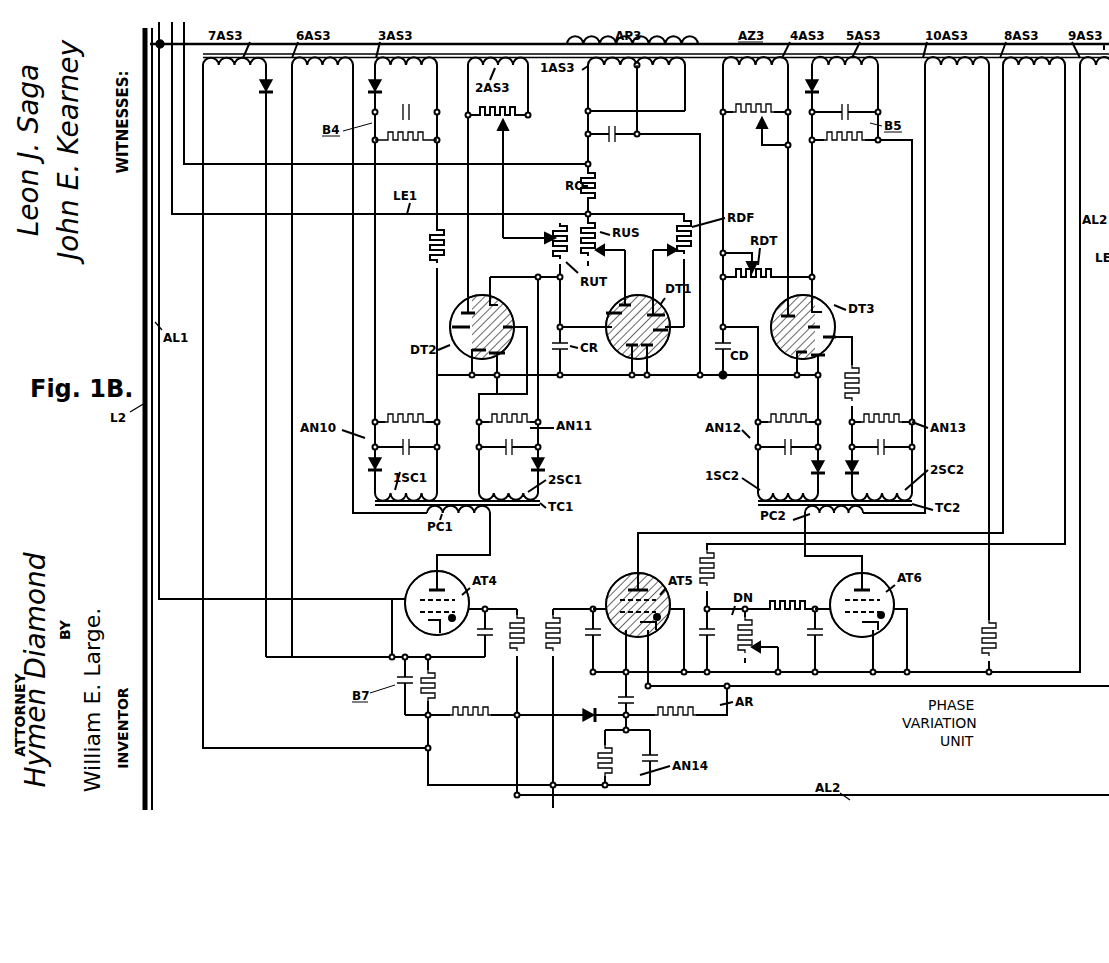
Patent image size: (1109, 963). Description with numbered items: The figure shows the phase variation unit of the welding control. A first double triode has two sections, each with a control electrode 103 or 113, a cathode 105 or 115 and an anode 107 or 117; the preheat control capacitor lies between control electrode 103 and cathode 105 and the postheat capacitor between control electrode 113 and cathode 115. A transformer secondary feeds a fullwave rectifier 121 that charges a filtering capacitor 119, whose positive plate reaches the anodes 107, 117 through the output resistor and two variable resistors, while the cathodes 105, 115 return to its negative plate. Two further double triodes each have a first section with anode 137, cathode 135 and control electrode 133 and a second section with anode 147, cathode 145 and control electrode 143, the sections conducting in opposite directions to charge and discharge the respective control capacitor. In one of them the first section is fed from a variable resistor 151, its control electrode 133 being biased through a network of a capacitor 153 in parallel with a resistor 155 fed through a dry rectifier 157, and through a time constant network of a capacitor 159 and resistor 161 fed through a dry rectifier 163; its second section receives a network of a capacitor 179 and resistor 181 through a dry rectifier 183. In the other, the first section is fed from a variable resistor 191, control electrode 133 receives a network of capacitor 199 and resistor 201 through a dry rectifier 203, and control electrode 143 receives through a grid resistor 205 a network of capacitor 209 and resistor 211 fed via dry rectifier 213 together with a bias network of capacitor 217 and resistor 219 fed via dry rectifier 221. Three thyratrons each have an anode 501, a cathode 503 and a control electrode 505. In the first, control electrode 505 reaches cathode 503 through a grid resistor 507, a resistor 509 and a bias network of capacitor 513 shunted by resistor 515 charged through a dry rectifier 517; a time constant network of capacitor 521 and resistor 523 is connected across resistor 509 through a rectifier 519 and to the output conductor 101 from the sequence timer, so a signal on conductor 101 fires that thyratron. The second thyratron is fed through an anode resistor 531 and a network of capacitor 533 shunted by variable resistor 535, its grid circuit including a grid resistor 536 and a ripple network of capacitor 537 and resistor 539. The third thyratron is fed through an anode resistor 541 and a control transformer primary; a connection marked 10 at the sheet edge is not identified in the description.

The dry rectifier 517 is at (258, 87).
The dry rectifier 157 is at (369, 87).
The capacitor 153 is at (409, 103).
The resistor 155 is at (402, 143).
The variable resistor 151 is at (510, 122).
The fullwave rectifier 121 is at (662, 93).
The filtering capacitor 119 is at (615, 142).
The dry rectifier 221 is at (804, 87).
The capacitor 217 is at (845, 103).
The resistor 219 is at (843, 143).
The variable resistor 191 is at (752, 120).
The anode 137 is at (464, 308).
The cathode 145 is at (830, 296).
The control electrode 143 is at (512, 322).
The control electrode 133 is at (452, 327).
The cathode 135 is at (472, 352).
The anode 147 is at (497, 355).
The anode 107 is at (622, 304).
The control electrode 103 is at (608, 314).
The cathode 105 is at (628, 350).
The anode 117 is at (660, 316).
The control electrode 113 is at (662, 335).
The cathode 115 is at (650, 350).
The grid resistor 205 is at (860, 385).
The resistor 161 is at (410, 414).
The capacitor 159 is at (412, 450).
The dry rectifier 163 is at (367, 466).
The resistor 181 is at (520, 414).
The capacitor 179 is at (509, 452).
The dry rectifier 183 is at (546, 464).
The resistor 201 is at (795, 411).
The capacitor 199 is at (765, 450).
The dry rectifier 203 is at (810, 468).
The resistor 211 is at (876, 414).
The capacitor 209 is at (884, 434).
The dry rectifier 213 is at (860, 468).
The anode 501 is at (430, 588).
The cathode 503 is at (440, 632).
The control electrode 505 is at (415, 612).
The grid resistor 507 is at (530, 620).
The resistor 509 is at (473, 718).
The capacitor 513 is at (395, 690).
The resistor 515 is at (437, 686).
The rectifier 519 is at (592, 722).
The capacitor 521 is at (648, 758).
The resistor 523 is at (598, 762).
The anode resistor 531 is at (715, 570).
The capacitor 533 is at (715, 636).
The variable resistor 535 is at (754, 632).
The grid resistor 536 is at (560, 652).
The capacitor 537 is at (618, 700).
The resistor 539 is at (678, 718).
The anode resistor 541 is at (997, 638).
The output conductor 101 is at (553, 808).
The line 10 is at (1108, 90).